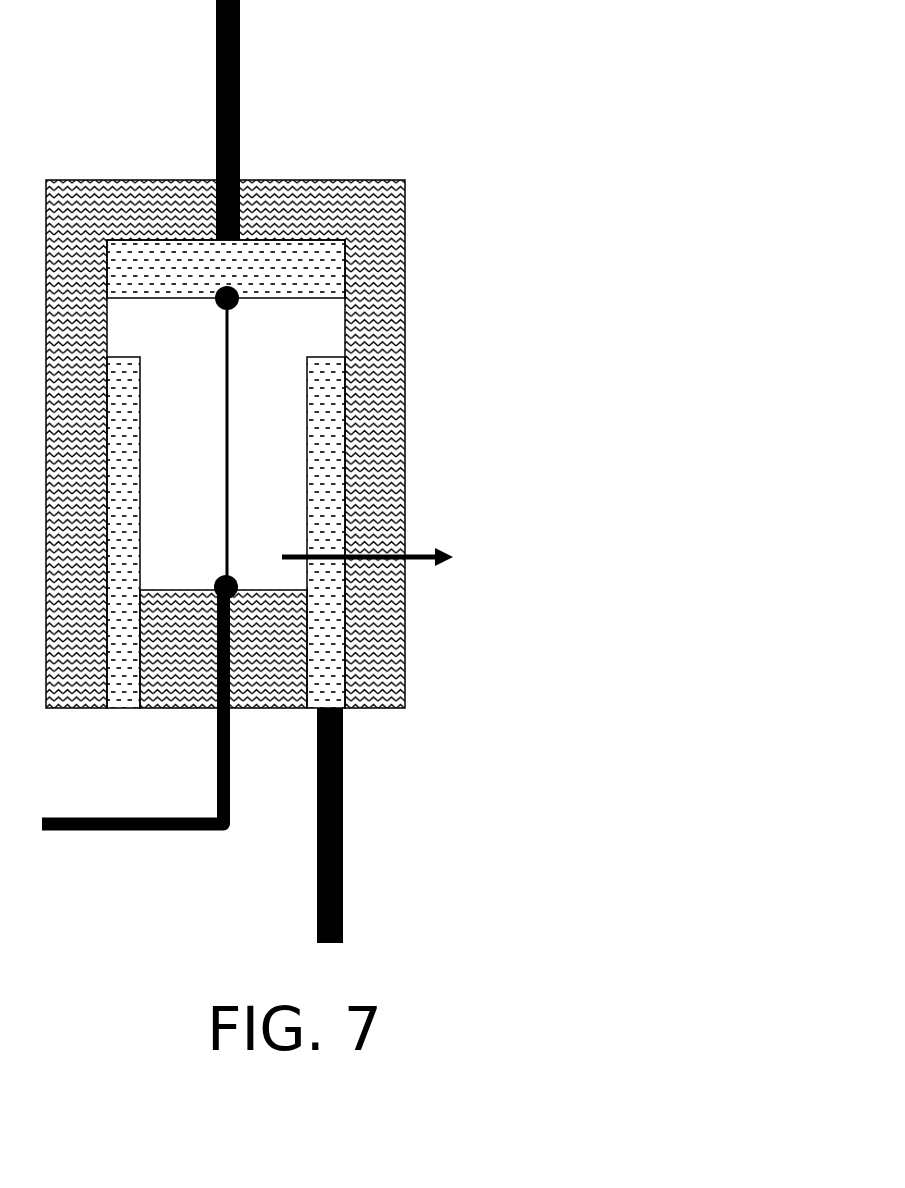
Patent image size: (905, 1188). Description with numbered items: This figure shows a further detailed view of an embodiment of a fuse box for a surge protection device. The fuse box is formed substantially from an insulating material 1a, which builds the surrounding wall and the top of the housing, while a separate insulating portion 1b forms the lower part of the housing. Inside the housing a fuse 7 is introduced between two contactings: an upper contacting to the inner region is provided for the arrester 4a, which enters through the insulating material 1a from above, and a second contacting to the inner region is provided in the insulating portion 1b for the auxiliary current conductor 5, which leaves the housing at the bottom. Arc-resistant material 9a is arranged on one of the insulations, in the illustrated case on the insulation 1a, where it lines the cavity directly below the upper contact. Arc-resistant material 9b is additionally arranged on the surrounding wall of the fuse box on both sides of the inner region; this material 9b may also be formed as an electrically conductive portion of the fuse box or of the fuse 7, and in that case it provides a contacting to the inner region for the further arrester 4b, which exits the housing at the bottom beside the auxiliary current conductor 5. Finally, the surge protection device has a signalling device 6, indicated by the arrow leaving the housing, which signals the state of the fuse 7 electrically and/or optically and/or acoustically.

The insulating material 1a is at (253, 197).
The insulating portion 1b is at (255, 640).
The arrester 4a is at (245, 62).
The arrester 4b is at (355, 750).
The auxiliary current conductor 5 is at (235, 730).
The signalling device 6 is at (441, 546).
The fuse 7 is at (233, 417).
The arc-resistant material 9a is at (265, 275).
The arc-resistant material / electrically conductive portion 9b is at (325, 423).